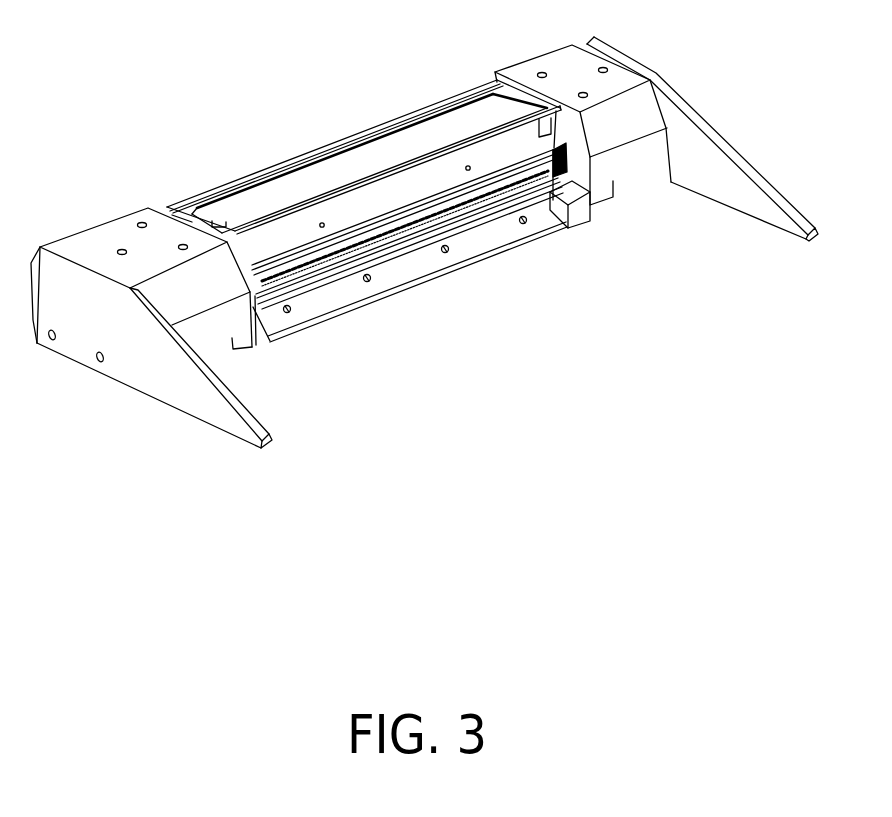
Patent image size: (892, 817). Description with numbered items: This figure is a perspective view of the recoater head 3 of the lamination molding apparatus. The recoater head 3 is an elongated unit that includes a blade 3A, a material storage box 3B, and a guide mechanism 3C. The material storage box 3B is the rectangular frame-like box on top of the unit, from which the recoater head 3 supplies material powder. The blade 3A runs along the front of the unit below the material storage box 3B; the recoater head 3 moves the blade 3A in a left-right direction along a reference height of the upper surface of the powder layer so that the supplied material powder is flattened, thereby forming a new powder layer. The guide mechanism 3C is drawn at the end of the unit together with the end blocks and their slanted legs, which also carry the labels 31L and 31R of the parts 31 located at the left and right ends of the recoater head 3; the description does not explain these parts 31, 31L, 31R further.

The recoater head 3 is at (424, 242).
The blade 3A is at (437, 281).
The material storage box 3B is at (415, 143).
The guide mechanism 3C is at (656, 139).
The support member 31 is at (424, 242).
The left support member 31L is at (254, 348).
The right support member 31R is at (648, 184).